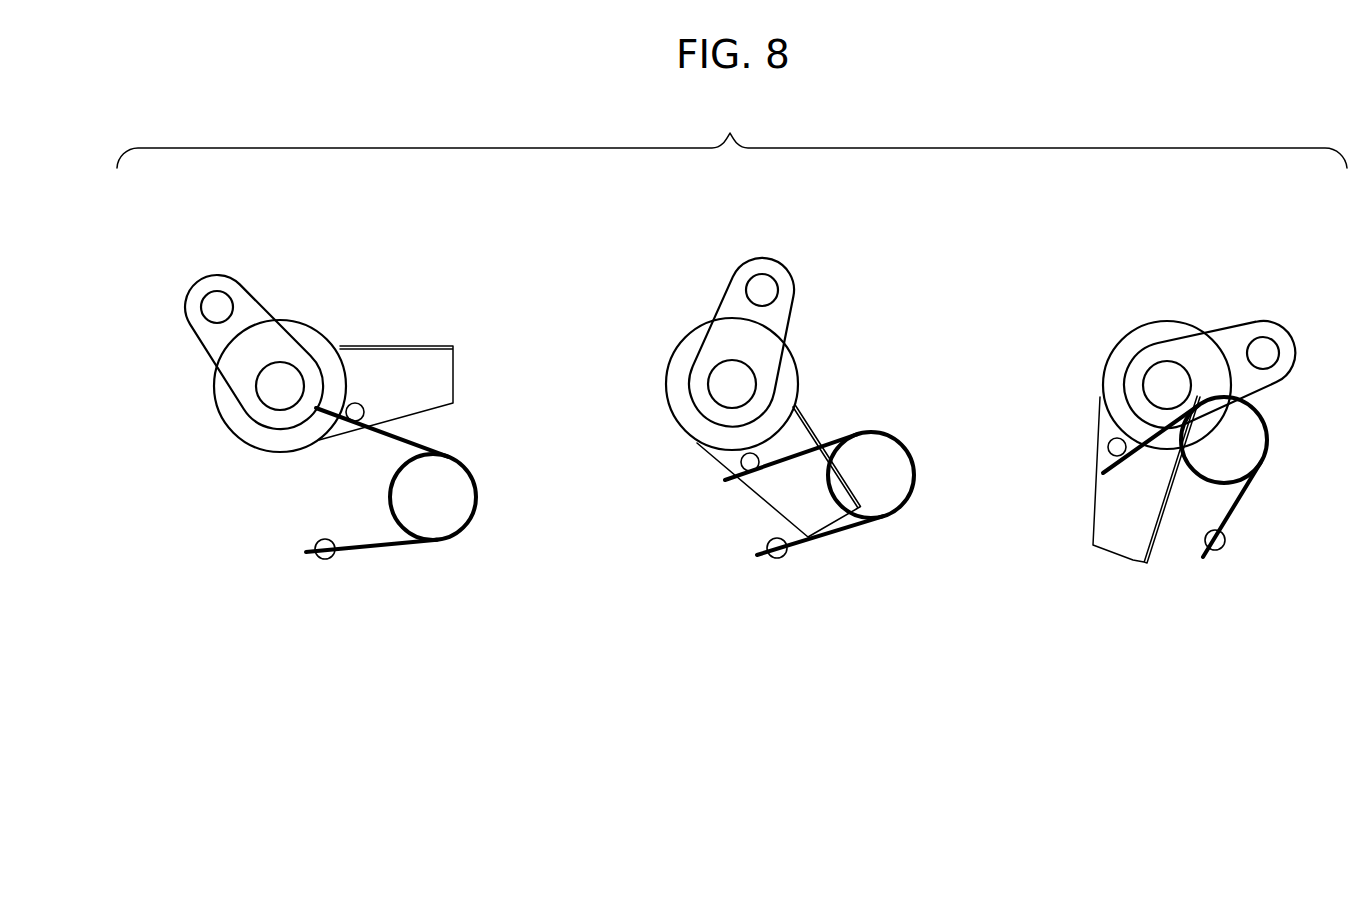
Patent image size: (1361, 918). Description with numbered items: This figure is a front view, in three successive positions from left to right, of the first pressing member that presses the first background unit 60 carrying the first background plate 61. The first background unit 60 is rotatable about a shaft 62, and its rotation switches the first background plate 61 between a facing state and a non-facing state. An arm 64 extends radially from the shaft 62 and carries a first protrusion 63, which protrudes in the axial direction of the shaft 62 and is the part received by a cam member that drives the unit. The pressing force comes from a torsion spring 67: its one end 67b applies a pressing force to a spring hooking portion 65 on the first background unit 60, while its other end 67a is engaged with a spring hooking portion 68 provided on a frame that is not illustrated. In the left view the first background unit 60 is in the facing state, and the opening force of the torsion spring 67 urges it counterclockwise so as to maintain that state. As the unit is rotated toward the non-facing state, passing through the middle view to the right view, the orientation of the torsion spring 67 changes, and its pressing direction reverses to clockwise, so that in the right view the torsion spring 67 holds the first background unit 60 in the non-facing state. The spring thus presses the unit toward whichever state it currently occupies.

The first background unit 60 is at (322, 272).
The first background plate 61 is at (396, 345).
The shaft 62 is at (268, 395).
The first protrusion 63 is at (216, 306).
The arm 64 is at (214, 345).
The spring hooking portion 65 is at (364, 412).
The torsion spring 67 is at (462, 532).
The other end 67a is at (378, 547).
The one end 67b is at (385, 437).
The spring hooking portion 68 is at (325, 560).